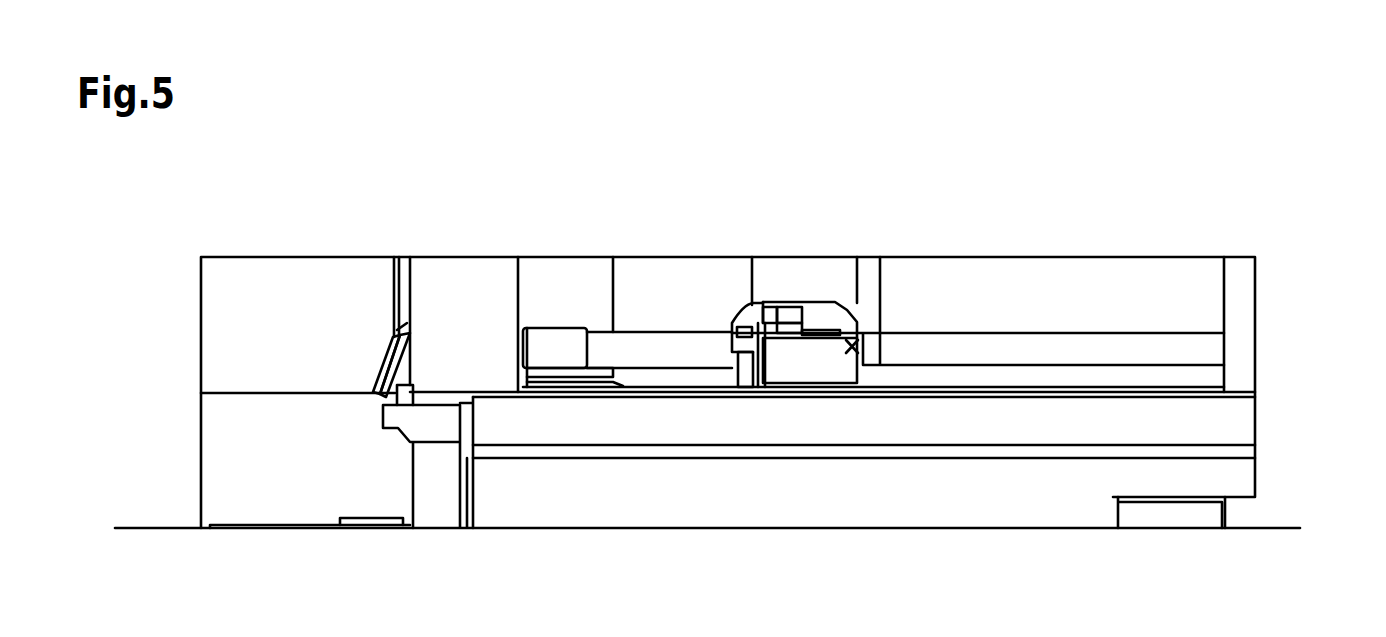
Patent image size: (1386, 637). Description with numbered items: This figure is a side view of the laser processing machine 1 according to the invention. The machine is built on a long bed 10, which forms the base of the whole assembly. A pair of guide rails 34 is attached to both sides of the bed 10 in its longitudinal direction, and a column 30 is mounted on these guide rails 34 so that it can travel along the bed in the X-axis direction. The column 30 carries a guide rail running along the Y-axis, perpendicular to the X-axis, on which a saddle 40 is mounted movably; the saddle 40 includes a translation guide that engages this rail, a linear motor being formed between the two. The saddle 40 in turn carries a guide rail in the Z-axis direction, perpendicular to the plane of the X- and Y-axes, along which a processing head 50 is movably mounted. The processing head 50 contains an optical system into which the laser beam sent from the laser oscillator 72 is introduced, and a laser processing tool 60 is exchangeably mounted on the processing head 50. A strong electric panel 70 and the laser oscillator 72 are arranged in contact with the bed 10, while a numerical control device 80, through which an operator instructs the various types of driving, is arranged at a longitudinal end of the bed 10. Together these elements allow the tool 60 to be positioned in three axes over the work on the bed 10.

The laser processing machine 1 is at (1052, 222).
The bed 10 is at (828, 493).
The column 30 is at (860, 337).
The guide rails 34 is at (962, 391).
The saddle 40 is at (817, 310).
The processing head 50 is at (730, 338).
The laser processing tool 60 is at (739, 378).
The strong electric panel 70 is at (247, 272).
The laser oscillator 72 is at (773, 268).
The numerical control device 80 is at (396, 340).